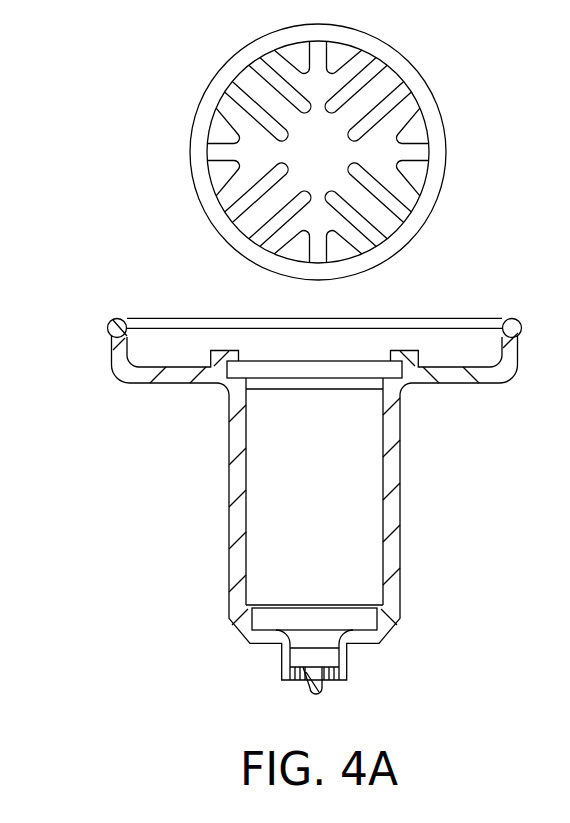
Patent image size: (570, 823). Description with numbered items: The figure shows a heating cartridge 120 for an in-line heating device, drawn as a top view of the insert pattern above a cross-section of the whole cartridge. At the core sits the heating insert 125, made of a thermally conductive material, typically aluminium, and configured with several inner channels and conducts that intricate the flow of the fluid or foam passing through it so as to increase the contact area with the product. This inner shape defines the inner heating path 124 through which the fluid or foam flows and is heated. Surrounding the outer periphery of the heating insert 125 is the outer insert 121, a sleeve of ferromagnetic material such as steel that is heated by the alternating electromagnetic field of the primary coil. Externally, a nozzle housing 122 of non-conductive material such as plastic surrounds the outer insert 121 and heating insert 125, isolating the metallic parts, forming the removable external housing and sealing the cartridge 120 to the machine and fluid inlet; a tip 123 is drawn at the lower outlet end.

The heating cartridge 120 is at (138, 600).
The outer insert 121 is at (198, 127).
The nozzle housing 122 is at (120, 388).
The tip 123 is at (305, 682).
The inner heating path 124 is at (423, 132).
The heating insert 125 is at (317, 150).